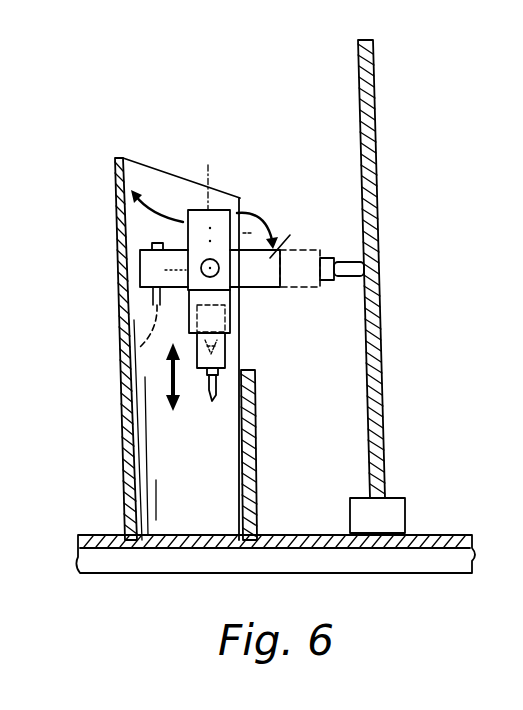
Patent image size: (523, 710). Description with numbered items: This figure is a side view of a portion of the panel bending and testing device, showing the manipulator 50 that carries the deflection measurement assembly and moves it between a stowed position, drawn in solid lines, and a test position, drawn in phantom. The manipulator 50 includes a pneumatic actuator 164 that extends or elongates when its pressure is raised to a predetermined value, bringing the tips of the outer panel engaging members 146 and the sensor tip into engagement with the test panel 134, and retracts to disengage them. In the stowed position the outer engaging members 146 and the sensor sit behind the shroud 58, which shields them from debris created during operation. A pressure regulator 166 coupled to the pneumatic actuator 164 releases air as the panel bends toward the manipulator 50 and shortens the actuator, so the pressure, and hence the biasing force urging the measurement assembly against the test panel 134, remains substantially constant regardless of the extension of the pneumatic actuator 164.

The manipulator 50 is at (208, 156).
The pneumatic actuator 164 is at (197, 207).
The pressure regulator 166 is at (153, 247).
The test panel 134 is at (372, 184).
The outer panel engaging members 146 is at (347, 277).
The shroud 58 is at (253, 413).